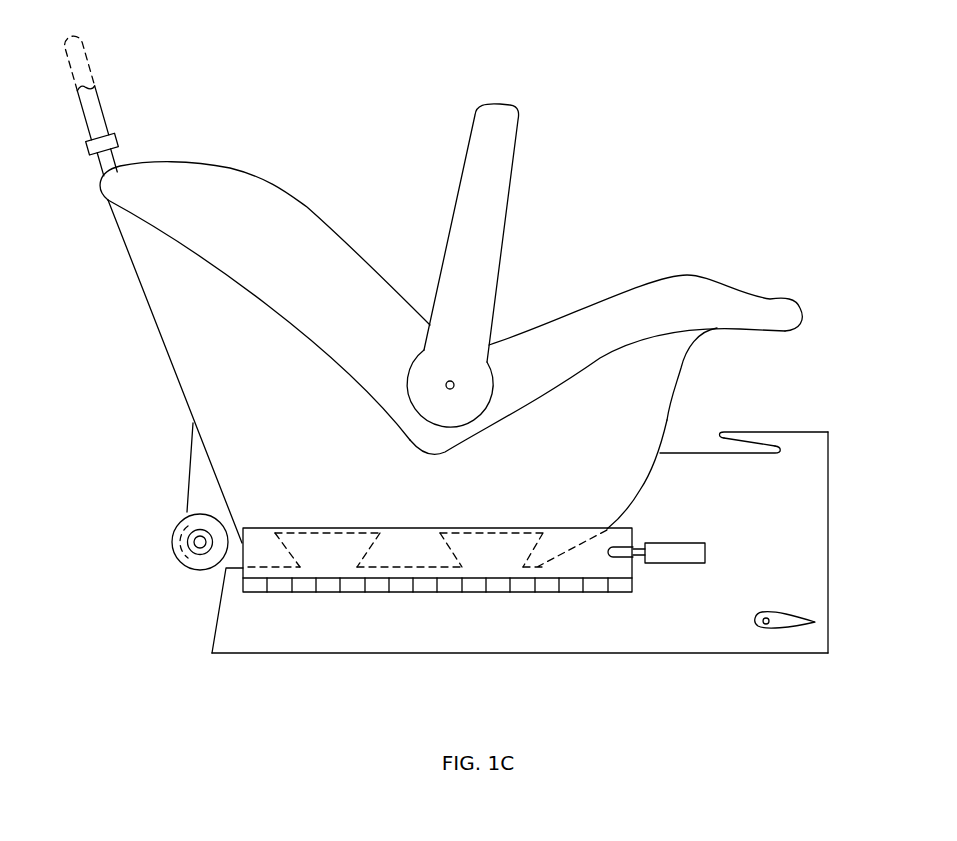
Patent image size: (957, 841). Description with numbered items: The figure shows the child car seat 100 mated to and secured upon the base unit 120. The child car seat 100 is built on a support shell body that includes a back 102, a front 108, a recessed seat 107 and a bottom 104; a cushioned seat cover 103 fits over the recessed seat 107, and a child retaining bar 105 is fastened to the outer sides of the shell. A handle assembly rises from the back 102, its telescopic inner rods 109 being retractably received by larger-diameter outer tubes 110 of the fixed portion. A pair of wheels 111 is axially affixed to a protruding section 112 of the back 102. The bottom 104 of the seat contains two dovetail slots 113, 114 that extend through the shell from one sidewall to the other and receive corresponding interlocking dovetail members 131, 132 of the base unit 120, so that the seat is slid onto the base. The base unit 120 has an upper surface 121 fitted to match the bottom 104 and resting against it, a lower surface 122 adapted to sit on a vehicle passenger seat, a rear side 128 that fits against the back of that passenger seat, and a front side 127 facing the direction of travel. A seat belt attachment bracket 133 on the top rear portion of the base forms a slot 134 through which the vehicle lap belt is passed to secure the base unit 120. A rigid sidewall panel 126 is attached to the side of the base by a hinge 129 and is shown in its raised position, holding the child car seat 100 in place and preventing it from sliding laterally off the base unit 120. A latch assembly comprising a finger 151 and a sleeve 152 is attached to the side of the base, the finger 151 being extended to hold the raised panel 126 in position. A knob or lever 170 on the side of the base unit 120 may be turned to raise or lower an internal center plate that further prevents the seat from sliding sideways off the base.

The child car seat 100 is at (318, 218).
The back 102 is at (165, 352).
The cushioned seat cover 103 is at (567, 318).
The bottom 104 is at (403, 567).
The child retaining bar 105 is at (508, 203).
The recessed seat 107 is at (542, 397).
The front 108 is at (675, 401).
The inner tubes or rods 109 is at (93, 72).
The outer tubes 110 is at (128, 152).
The wheels 111 is at (172, 538).
The protruding section 112 is at (187, 463).
The dovetail slot 113 is at (283, 552).
The dovetail slot 114 is at (450, 552).
The base unit 120 is at (812, 431).
The upper surface 121 is at (647, 488).
The lower surface 122 is at (678, 653).
The rigid sidewall panel 126 is at (633, 529).
The front side 127 is at (221, 612).
The rear side 128 is at (830, 527).
The hinge 129 is at (448, 592).
The dovetail member 131 is at (314, 550).
The dovetail member 132 is at (450, 550).
The seat belt attachment bracket 133 is at (736, 428).
The slot 134 is at (727, 443).
The finger 151 is at (620, 560).
The sleeve 152 is at (700, 563).
The knob or lever 170 is at (785, 617).